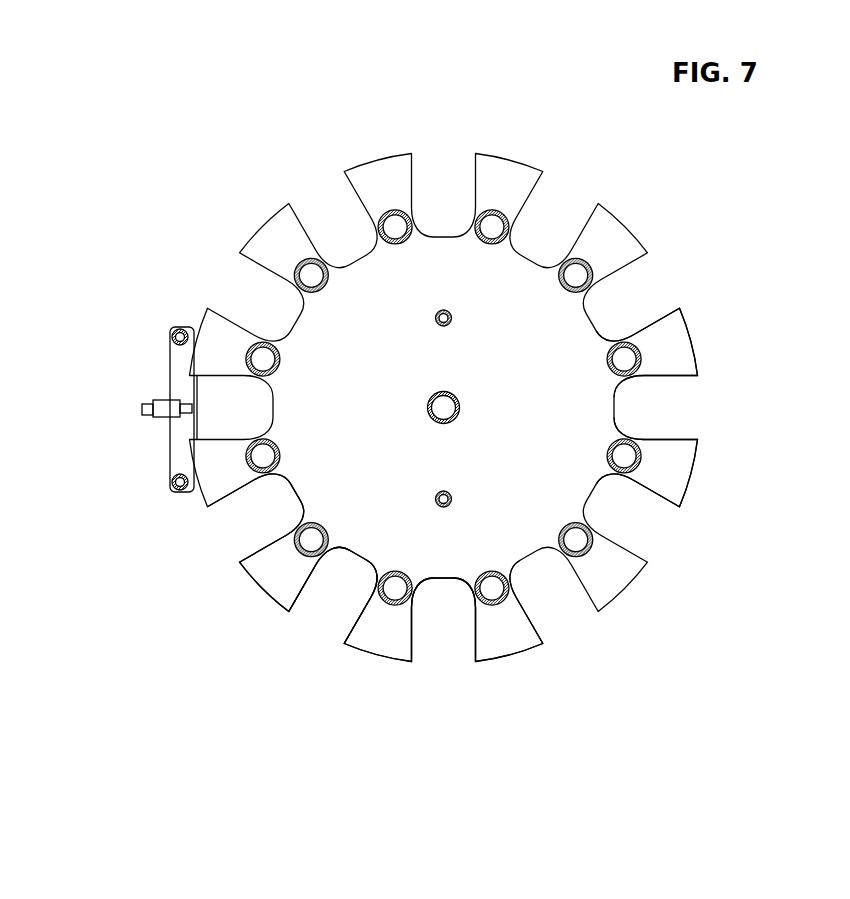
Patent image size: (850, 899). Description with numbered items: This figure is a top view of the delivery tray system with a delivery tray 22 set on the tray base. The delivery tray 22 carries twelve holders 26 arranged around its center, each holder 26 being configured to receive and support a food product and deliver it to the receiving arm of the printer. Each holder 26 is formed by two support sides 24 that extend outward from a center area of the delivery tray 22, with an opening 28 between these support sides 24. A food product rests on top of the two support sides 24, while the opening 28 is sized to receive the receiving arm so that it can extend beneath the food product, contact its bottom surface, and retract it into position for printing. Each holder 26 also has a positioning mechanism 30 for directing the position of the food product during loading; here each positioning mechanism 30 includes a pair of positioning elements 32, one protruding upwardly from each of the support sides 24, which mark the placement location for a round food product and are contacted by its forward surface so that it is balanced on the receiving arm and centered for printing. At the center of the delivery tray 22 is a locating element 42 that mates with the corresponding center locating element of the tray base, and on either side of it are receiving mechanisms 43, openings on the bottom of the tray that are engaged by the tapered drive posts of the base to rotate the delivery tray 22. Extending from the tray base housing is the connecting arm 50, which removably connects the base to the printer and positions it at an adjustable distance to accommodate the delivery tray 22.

The delivery tray 22 is at (183, 248).
The support sides 24 is at (272, 575).
The holder 26 is at (228, 700).
The opening 28 is at (337, 598).
The positioning mechanism 30 is at (645, 442).
The positioning element 32 is at (384, 218).
The locating element 42 is at (460, 408).
The receiving mechanism 43 is at (450, 323).
The connecting arm 50 is at (223, 413).